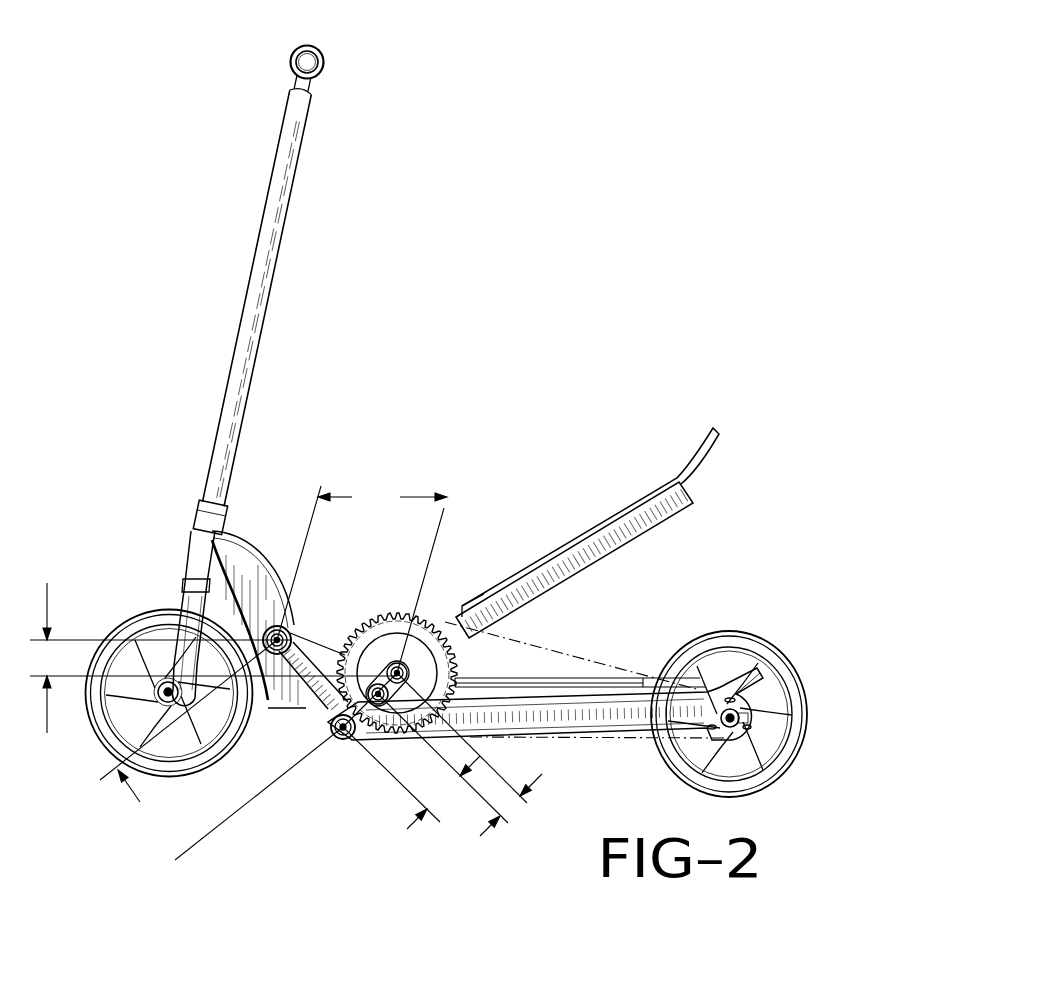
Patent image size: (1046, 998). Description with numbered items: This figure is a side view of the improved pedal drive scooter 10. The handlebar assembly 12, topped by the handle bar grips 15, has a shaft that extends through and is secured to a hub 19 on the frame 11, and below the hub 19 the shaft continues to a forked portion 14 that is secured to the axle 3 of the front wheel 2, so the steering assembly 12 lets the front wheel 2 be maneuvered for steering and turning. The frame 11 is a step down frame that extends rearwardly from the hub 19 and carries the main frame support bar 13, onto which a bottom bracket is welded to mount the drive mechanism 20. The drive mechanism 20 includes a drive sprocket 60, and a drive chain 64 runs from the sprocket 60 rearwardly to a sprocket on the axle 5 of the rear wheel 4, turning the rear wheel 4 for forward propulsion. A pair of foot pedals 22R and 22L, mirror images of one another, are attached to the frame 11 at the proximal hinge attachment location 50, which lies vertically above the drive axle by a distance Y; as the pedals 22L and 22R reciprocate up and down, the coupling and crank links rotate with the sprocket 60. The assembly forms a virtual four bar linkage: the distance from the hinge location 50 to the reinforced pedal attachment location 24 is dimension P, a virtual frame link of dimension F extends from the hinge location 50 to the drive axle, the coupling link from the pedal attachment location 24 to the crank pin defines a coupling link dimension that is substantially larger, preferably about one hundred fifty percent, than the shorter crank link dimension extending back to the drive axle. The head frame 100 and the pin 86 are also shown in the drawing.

The pedal drive scooter 10 is at (121, 265).
The handle bar grips 15 is at (323, 52).
The handlebar assembly 12 is at (228, 400).
The hub 19 is at (199, 530).
The forked portion 14 is at (198, 612).
The head frame 100 is at (252, 533).
The frame 11 is at (271, 700).
The proximal hinge attachment location 50 is at (288, 632).
The drive sprocket 60 is at (388, 645).
The drive mechanism 20 is at (441, 596).
The crank pin 86 is at (346, 740).
The reinforced pedal attachment location 24 is at (339, 735).
The foot pedal 22L is at (607, 705).
The foot pedal 22R is at (611, 518).
The drive chain 64 is at (638, 643).
The main frame support bar 13 is at (514, 688).
The front wheel 2 is at (101, 745).
The axle 3 is at (190, 700).
The rear wheel 4 is at (791, 662).
The axle 5 is at (736, 722).